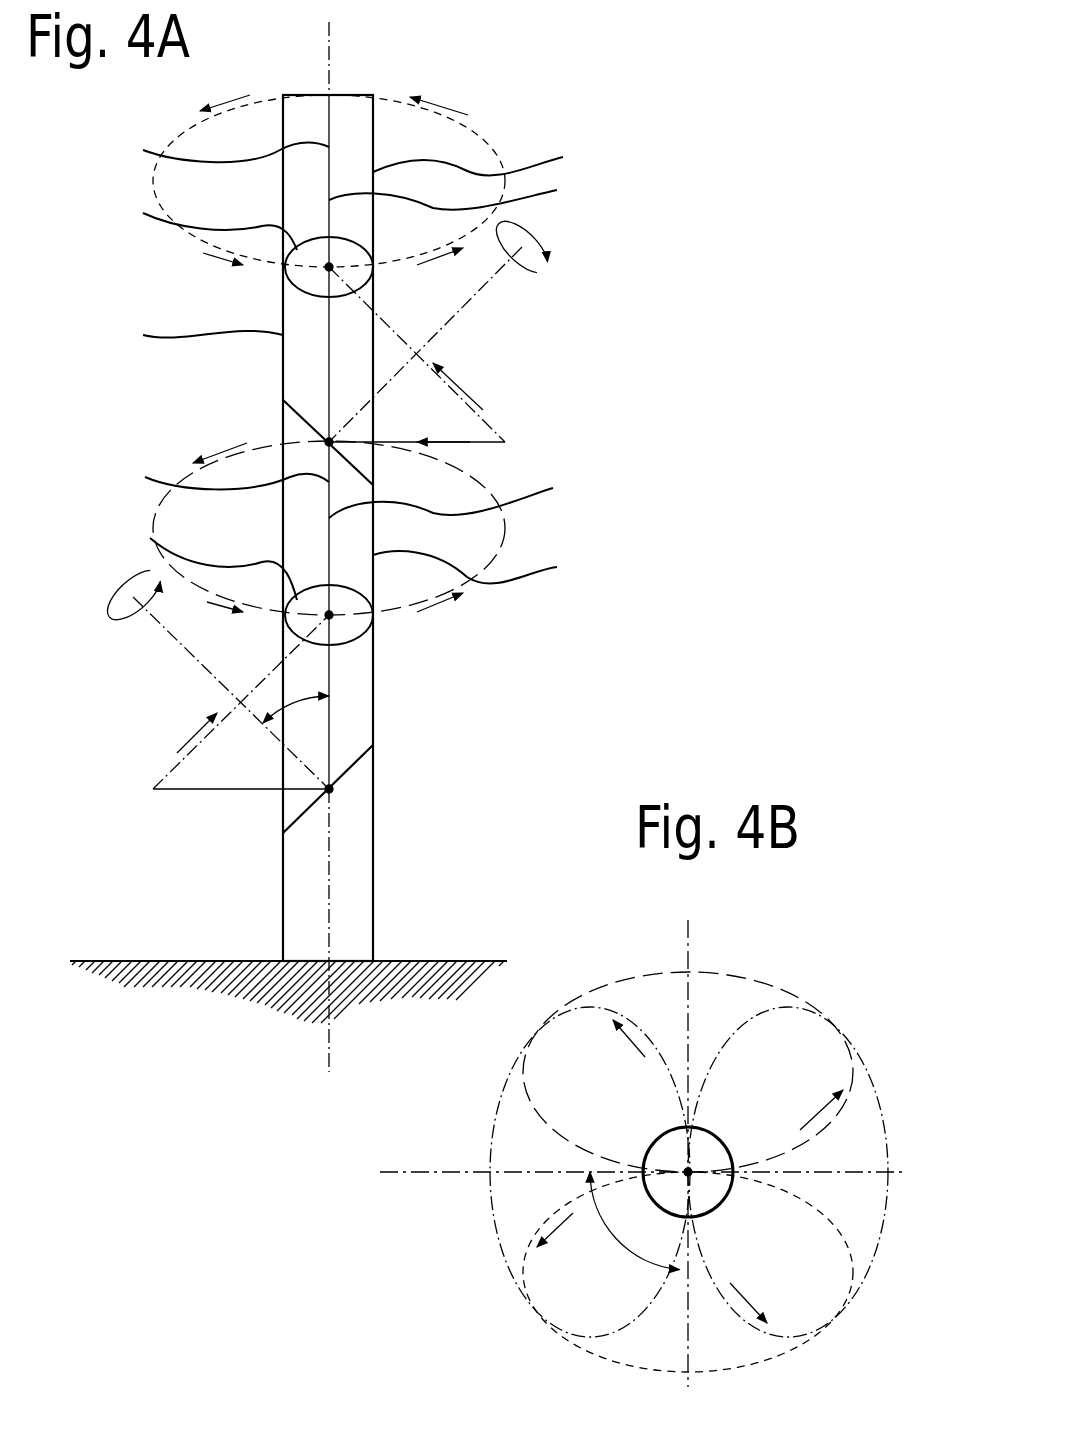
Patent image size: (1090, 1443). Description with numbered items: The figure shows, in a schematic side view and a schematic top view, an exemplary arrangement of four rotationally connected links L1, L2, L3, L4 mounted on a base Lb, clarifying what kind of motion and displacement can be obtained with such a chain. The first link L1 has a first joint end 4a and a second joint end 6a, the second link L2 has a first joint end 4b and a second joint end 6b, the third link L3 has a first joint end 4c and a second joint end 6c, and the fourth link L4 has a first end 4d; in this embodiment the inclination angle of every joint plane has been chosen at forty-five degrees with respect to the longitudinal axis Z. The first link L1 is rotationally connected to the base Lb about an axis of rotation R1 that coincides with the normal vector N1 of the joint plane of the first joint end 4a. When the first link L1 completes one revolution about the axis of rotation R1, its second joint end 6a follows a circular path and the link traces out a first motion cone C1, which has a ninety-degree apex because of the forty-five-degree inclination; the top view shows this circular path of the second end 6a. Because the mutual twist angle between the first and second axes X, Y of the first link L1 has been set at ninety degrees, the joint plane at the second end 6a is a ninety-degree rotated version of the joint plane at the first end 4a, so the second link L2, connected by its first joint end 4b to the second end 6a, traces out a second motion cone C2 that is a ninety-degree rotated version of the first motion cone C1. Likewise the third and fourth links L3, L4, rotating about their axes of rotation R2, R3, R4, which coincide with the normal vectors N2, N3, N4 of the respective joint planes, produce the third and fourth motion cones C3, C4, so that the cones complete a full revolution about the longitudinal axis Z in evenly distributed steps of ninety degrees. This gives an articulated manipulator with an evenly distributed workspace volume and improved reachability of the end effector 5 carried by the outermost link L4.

In FIG. 4A, the end effector 5 is at (308, 95).
In FIG. 4A, the longitudinal axis Z is at (333, 46).
In FIG. 4A, the fourth motion cone C4 is at (478, 136).
In FIG. 4B, the fourth motion cone C4 is at (757, 1362).
In FIG. 4A, the axis of rotation of the fourth link R4 is at (219, 150).
In FIG. 4A, the fourth link L4 is at (480, 158).
In FIG. 4A, the normal vector of the fourth joint plane N4 is at (460, 193).
In FIG. 4A, the first end of the fourth link 4d is at (203, 225).
In FIG. 4A, the second joint end of the third link 6c is at (300, 283).
In FIG. 4A, the normal vector of the third joint plane N3 is at (467, 302).
In FIG. 4A, the axis of rotation of the third link R3 is at (446, 325).
In FIG. 4A, the third link L3 is at (197, 335).
In FIG. 4A, the first joint end of the third link 4c is at (290, 400).
In FIG. 4A, the second joint end of the second link 6b is at (295, 412).
In FIG. 4A, the third motion cone C3 is at (488, 427).
In FIG. 4B, the third motion cone C3 is at (862, 1070).
In FIG. 4A, the axis of rotation of the second link R2 is at (220, 478).
In FIG. 4A, the normal vector of the second joint plane N2 is at (459, 496).
In FIG. 4A, the first joint end of the second link 4b is at (204, 563).
In FIG. 4A, the second motion cone C2 is at (505, 530).
In FIG. 4B, the second motion cone C2 is at (753, 981).
In FIG. 4A, the second link L2 is at (478, 567).
In FIG. 4A, the axis of rotation of the first link R1 is at (202, 660).
In FIG. 4A, the second joint end of the first link 6a is at (362, 638).
In FIG. 4A, the normal vector of the first joint plane N1 is at (230, 692).
In FIG. 4A, the first link L1 is at (373, 698).
In FIG. 4A, the first motion cone C1 is at (175, 767).
In FIG. 4B, the first motion cone C1 is at (490, 1210).
In FIG. 4A, the first joint end of the first link 4a is at (362, 756).
In FIG. 4A, the base Lb is at (373, 850).
In FIG. 4B, the first axis X is at (440, 1172).
In FIG. 4B, the second axis Y is at (689, 930).